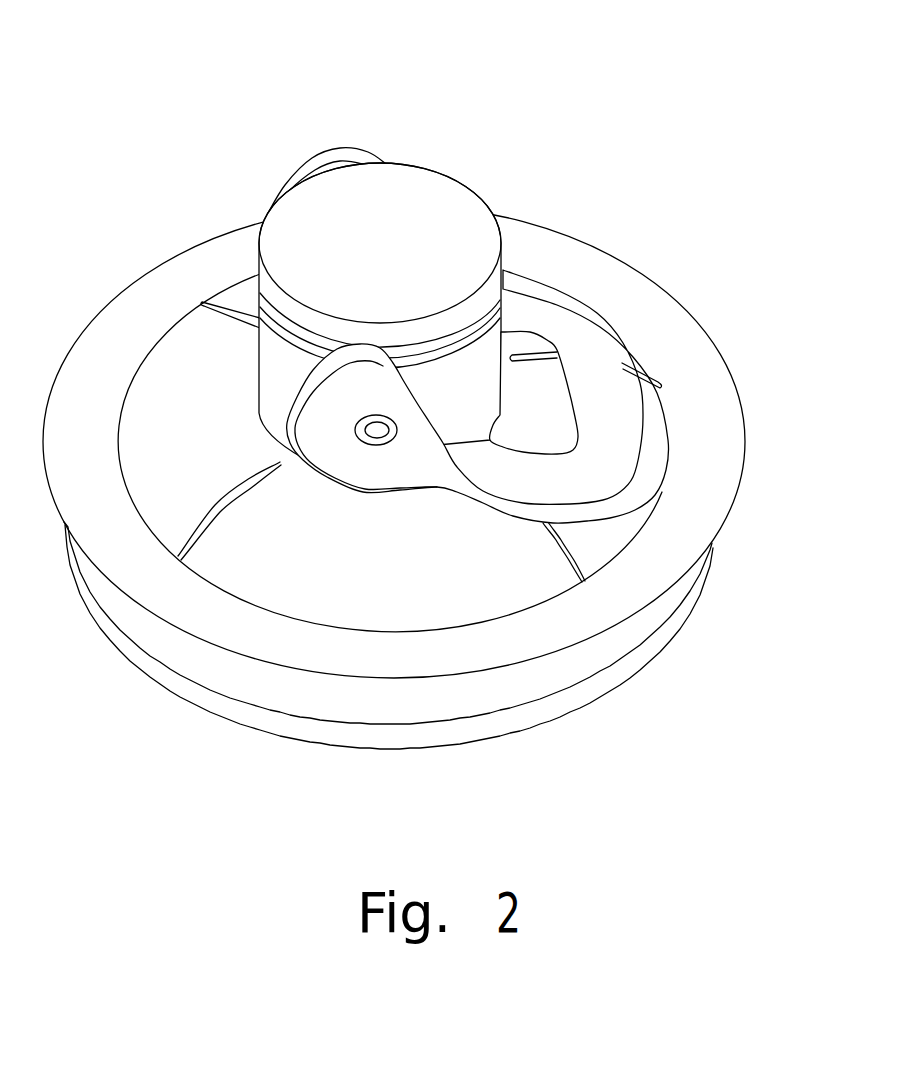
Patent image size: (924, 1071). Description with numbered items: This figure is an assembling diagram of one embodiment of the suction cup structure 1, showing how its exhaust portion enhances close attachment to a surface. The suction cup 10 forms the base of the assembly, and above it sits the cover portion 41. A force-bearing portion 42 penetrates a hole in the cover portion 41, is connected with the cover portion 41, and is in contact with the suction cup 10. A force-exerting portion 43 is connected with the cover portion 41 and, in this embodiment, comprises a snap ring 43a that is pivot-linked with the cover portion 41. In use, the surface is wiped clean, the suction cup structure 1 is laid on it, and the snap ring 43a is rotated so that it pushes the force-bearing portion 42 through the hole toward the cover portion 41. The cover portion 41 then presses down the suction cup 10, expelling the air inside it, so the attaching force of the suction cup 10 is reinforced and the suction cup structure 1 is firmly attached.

The suction cup structure 1 is at (466, 411).
The suction cup 10 is at (630, 662).
The cover portion 41 is at (466, 379).
The force-bearing portion 42 is at (433, 203).
The force-exerting portion 43 is at (532, 342).
The snap ring 43a is at (577, 365).